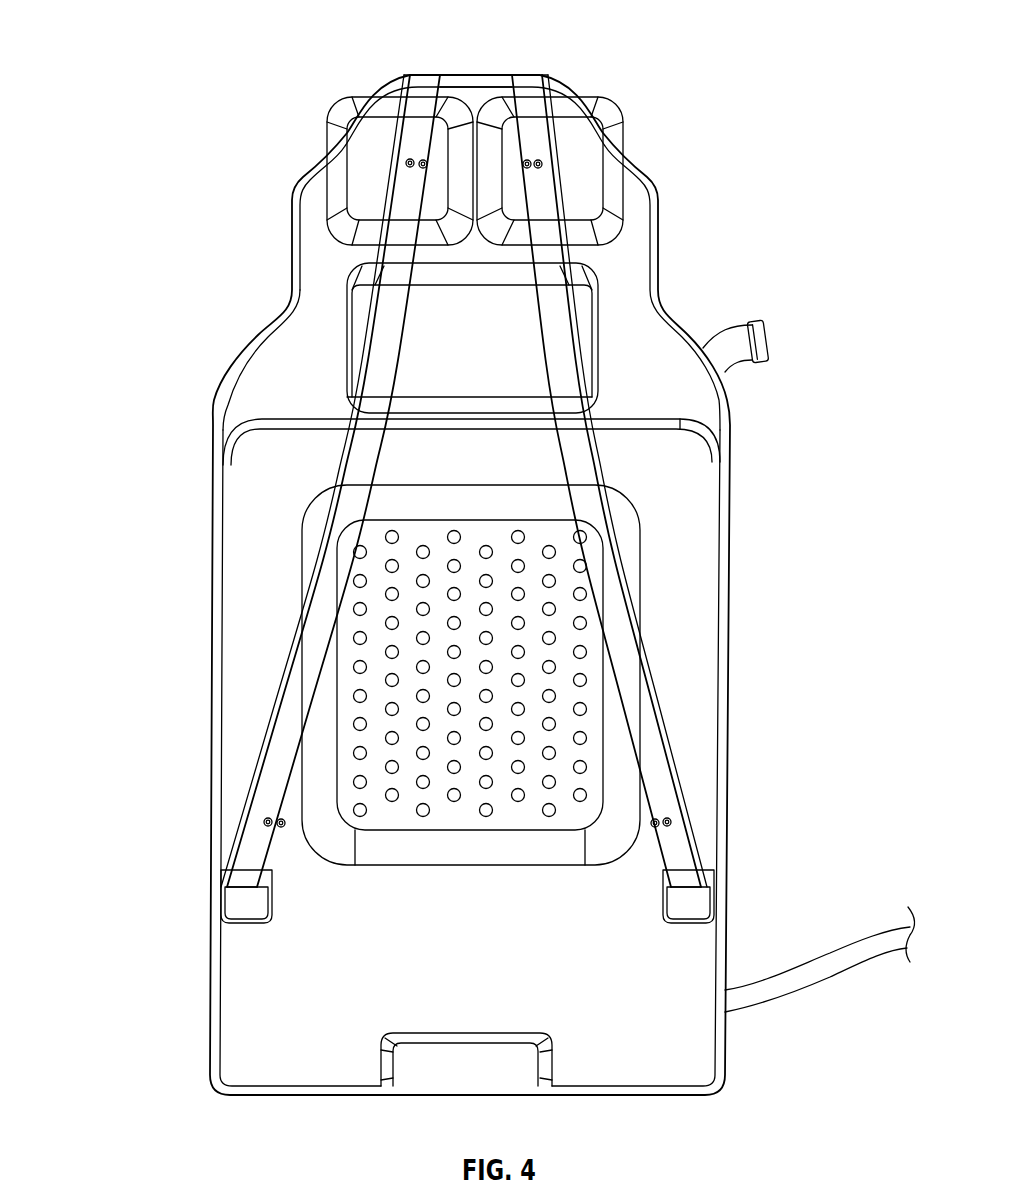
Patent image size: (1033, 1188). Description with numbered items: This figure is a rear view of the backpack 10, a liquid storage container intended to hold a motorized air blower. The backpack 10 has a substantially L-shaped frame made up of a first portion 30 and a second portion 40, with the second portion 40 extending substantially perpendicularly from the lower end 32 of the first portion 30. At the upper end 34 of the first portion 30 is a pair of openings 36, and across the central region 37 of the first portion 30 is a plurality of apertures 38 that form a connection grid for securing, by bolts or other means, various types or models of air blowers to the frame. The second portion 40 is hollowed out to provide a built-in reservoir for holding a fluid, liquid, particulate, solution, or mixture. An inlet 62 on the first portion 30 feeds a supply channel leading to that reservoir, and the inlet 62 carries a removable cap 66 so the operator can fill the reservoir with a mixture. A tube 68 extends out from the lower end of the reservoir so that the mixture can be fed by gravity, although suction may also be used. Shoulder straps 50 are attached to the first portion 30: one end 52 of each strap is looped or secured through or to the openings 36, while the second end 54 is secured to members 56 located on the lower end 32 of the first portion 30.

The backpack 10 is at (664, 190).
The first portion 30 is at (700, 505).
The lower end 32 is at (197, 880).
The upper end 34 is at (478, 76).
The openings 36 is at (370, 185).
The central region 37 is at (560, 645).
The apertures 38 is at (423, 553).
The second portion 40 is at (705, 962).
The shoulder straps 50 is at (390, 320).
The one end 52 is at (412, 78).
The second end 54 is at (262, 852).
The members 56 is at (222, 870).
The inlet 62 is at (748, 348).
The cap 66 is at (752, 330).
The tube 68 is at (810, 992).